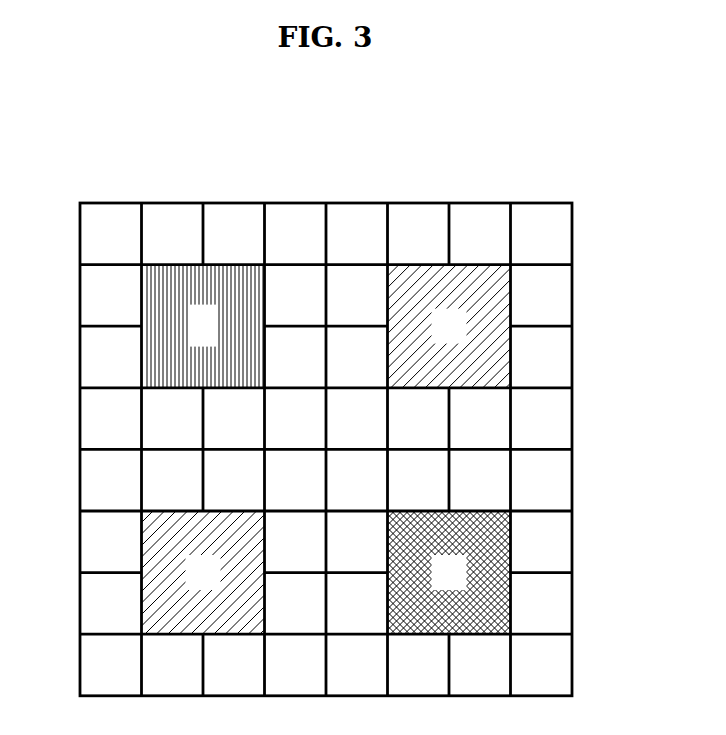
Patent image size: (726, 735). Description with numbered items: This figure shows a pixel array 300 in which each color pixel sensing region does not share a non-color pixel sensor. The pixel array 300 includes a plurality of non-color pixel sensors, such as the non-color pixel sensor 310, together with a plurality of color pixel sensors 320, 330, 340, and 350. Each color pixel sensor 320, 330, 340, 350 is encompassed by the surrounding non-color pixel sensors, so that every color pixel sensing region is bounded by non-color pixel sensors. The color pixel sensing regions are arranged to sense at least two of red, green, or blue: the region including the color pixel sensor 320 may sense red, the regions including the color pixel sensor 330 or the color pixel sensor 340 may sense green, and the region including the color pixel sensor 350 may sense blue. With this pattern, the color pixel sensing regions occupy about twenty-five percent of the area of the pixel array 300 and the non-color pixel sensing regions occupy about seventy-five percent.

The pixel array 300 is at (304, 142).
The non-color pixel sensor 310 is at (90, 236).
The color pixel sensor 320 is at (153, 307).
The color pixel sensor 330 is at (498, 307).
The color pixel sensor 340 is at (153, 553).
The color pixel sensor 350 is at (498, 552).